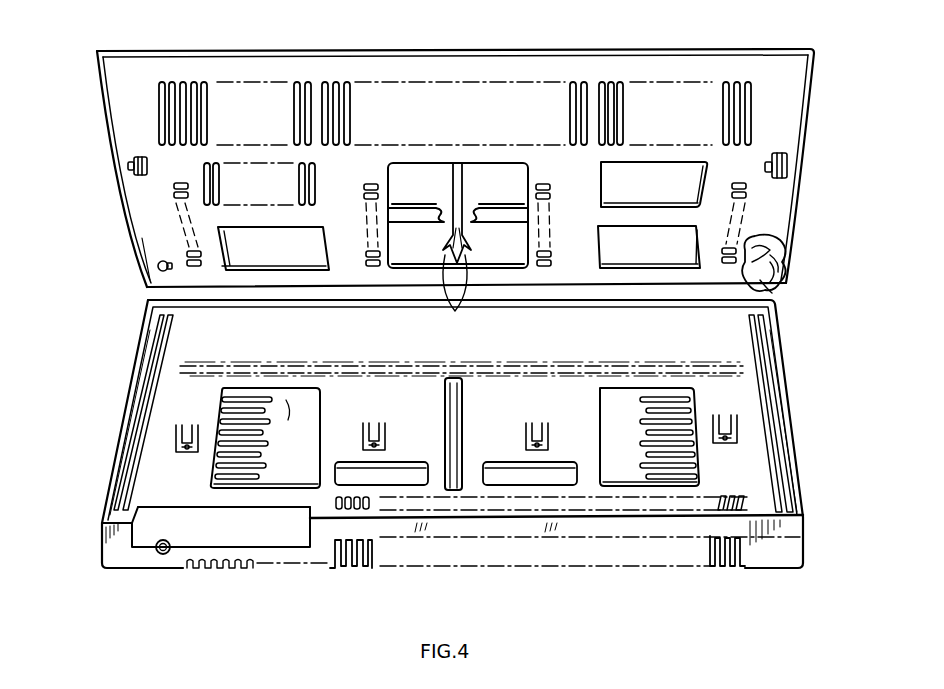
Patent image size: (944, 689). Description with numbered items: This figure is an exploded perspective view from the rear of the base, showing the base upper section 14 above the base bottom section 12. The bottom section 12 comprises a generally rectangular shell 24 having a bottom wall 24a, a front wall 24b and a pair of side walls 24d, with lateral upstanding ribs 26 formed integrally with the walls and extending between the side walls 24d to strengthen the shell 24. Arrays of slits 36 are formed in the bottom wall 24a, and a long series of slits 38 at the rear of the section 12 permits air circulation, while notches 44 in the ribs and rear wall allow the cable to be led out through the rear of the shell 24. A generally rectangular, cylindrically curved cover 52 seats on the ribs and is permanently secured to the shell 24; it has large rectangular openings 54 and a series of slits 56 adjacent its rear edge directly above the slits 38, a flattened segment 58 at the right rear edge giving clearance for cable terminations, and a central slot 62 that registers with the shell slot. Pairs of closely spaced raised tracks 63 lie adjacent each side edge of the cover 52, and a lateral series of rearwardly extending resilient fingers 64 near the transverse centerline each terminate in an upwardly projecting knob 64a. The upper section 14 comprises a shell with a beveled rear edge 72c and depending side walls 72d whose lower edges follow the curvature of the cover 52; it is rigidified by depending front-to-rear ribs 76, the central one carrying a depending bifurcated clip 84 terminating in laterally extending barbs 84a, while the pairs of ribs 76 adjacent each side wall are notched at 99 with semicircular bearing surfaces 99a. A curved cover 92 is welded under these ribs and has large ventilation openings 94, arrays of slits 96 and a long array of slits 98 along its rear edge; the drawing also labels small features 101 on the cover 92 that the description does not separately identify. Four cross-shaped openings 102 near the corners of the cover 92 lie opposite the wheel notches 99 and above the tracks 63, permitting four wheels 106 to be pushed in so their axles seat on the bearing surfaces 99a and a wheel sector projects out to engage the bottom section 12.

The base bottom section 12 is at (118, 437).
The base upper section 14 is at (100, 221).
The shell 24 is at (102, 541).
The bottom wall 24a is at (295, 413).
The front wall 24b is at (862, 540).
The side walls 24d is at (145, 365).
The lateral upstanding ribs 26 is at (624, 367).
The arrays of slits 36 is at (243, 413).
The slits 38 is at (355, 568).
The notches 44 is at (160, 555).
The cover 52 is at (183, 335).
The rectangular openings 54 is at (314, 410).
The slits 56 is at (738, 495).
The flattened segment 58 is at (265, 535).
The slot 62 is at (447, 395).
The raised tracks 63 is at (150, 405).
The resilient fingers 64 is at (185, 425).
The knob 64a is at (187, 452).
The rear edge 72c is at (700, 28).
The side walls 72d is at (97, 91).
The front-to-rear-extending ribs 76 is at (460, 190).
The bifurcated clip 84 is at (450, 222).
The barbs 84a is at (485, 334).
The cover 92 is at (140, 243).
The openings 94 is at (313, 232).
The arrays of slits 96 is at (313, 185).
The array of slits 98 is at (185, 82).
The wheel notches 99 is at (778, 271).
The bearing surfaces 99a is at (844, 273).
The snap tabs 101 is at (190, 168).
The cross-shaped openings 102 is at (133, 165).
The wheels 106 is at (133, 170).